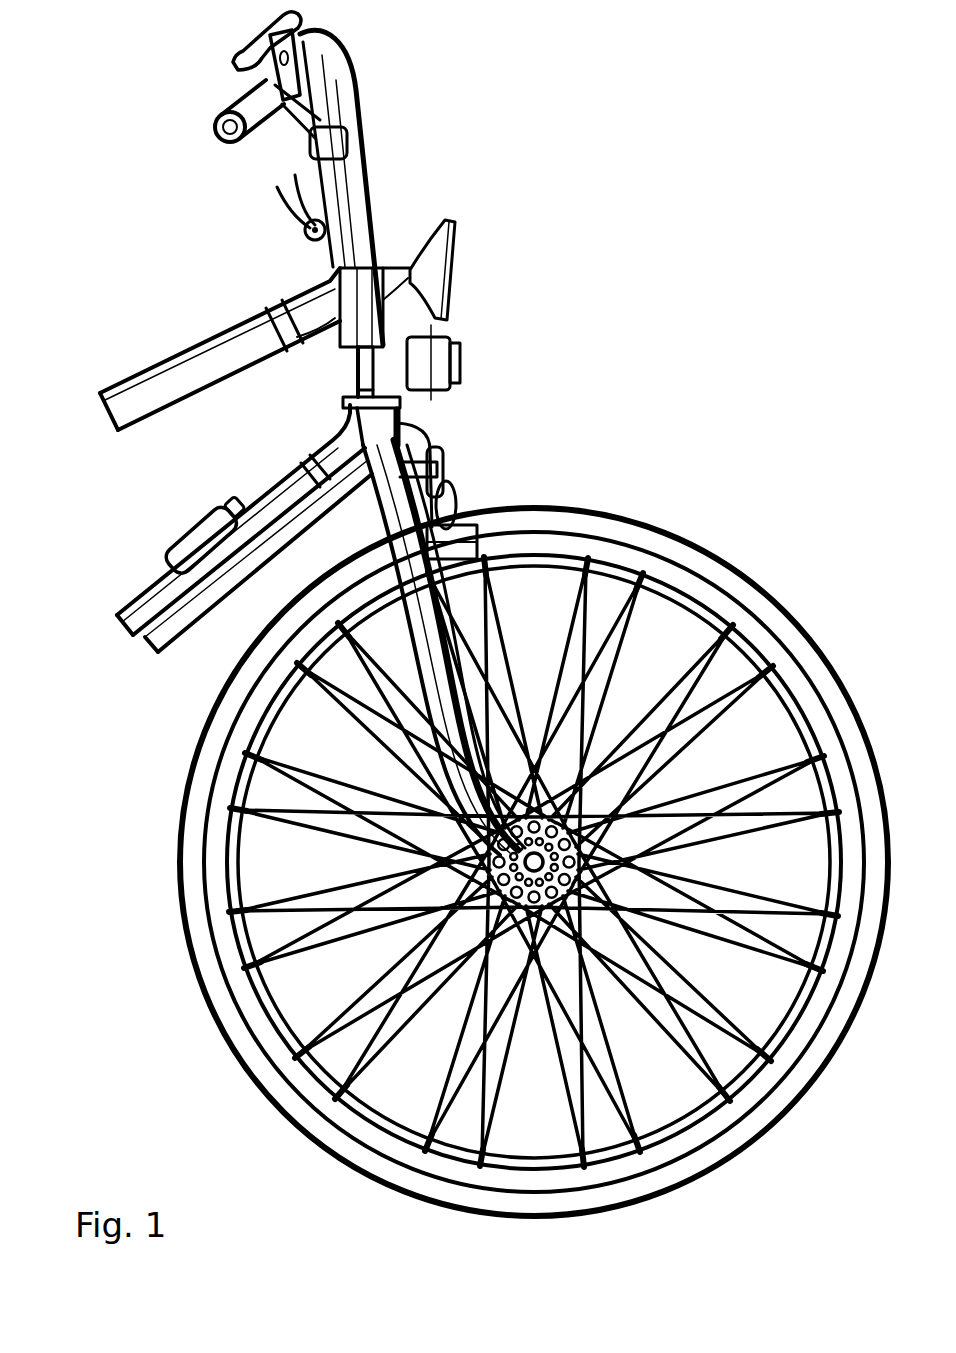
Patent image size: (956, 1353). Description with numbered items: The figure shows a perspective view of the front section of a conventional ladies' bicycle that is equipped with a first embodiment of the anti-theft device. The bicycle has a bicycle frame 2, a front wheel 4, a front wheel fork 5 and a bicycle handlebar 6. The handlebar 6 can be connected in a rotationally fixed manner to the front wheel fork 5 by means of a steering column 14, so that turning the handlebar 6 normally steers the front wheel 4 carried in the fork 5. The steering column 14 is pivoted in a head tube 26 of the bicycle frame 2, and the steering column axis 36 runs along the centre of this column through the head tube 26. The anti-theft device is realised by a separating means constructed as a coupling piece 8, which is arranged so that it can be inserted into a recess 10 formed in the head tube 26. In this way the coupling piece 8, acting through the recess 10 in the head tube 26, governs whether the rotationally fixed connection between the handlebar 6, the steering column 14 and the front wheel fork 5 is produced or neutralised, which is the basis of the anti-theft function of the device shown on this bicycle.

The bicycle frame 2 is at (156, 357).
The front wheel 4 is at (697, 537).
The front wheel fork 5 is at (415, 649).
The bicycle handlebar 6 is at (208, 102).
The coupling piece 8 is at (476, 361).
The recess 10 is at (388, 378).
The steering column 14 is at (370, 178).
The head tube 26 is at (340, 353).
The steering column axis 36 is at (376, 357).